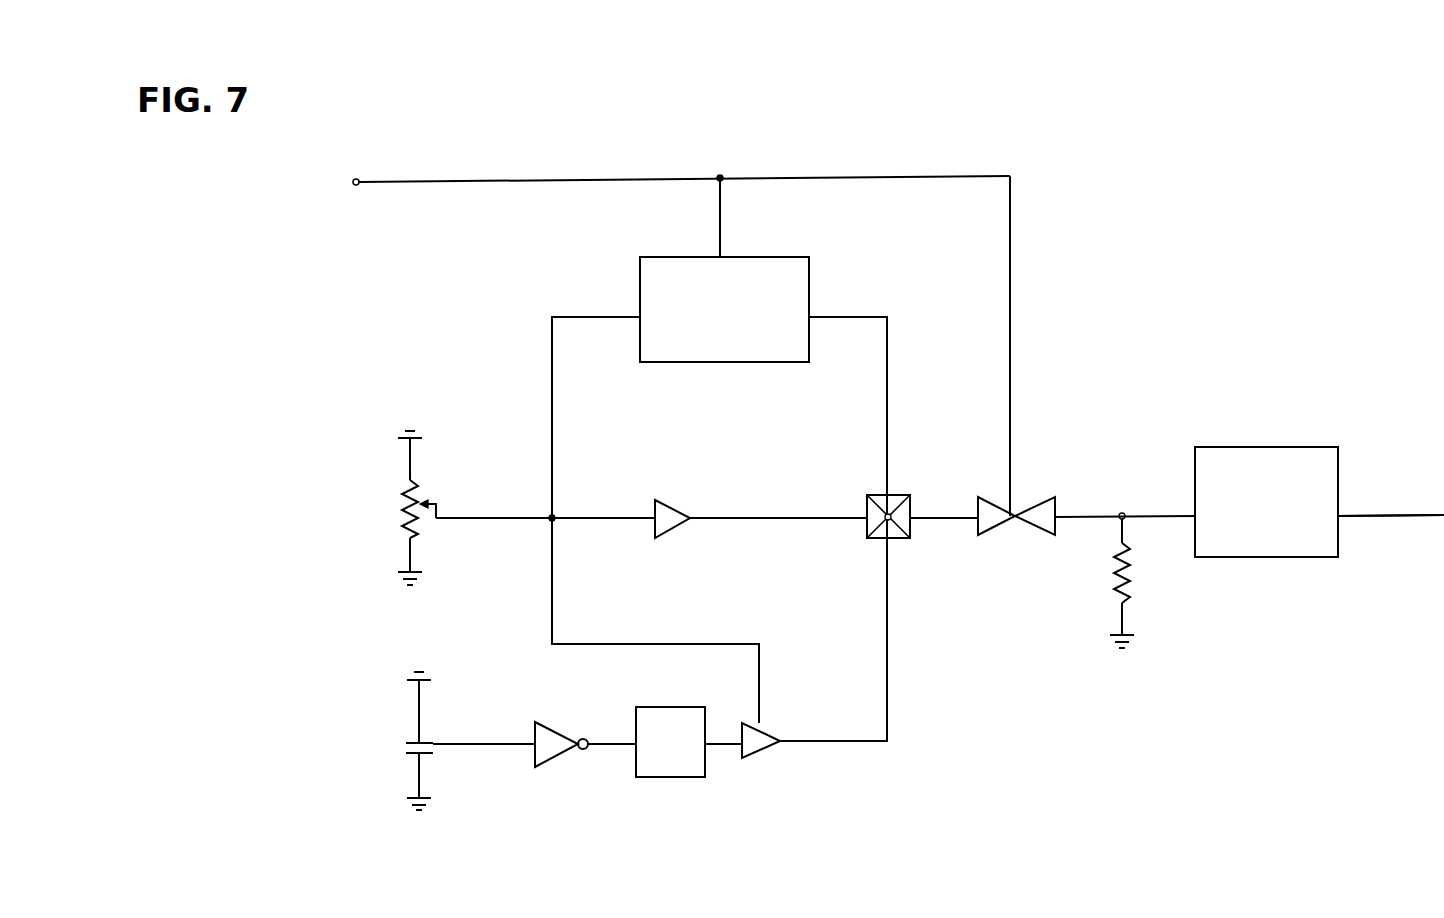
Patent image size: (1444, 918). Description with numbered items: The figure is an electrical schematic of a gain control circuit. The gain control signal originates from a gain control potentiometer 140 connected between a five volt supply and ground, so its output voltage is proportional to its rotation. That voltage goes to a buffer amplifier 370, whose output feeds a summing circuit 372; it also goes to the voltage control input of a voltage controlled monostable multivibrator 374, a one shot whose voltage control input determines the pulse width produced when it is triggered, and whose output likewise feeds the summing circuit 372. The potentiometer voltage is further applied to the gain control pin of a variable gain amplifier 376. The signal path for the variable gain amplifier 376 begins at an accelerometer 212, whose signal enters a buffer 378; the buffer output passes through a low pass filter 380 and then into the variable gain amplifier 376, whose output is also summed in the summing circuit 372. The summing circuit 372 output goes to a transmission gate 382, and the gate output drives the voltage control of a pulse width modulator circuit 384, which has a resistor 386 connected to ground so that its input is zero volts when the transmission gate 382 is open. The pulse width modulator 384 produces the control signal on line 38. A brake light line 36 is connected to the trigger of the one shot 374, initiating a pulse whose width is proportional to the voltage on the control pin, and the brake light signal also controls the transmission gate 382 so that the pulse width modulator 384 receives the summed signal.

The brake light line 36 is at (356, 179).
The voltage controlled monostable multivibrator 374 is at (648, 257).
The gain control potentiometer 140 is at (408, 495).
The buffer amplifier 370 is at (673, 531).
The summing circuit 372 is at (912, 537).
The transmission gate 382 is at (1030, 495).
The resistor 386 is at (1130, 584).
The pulse width modulator circuit 384 is at (1300, 447).
The line 38 is at (1400, 508).
The accelerometer 212 is at (415, 740).
The buffer 378 is at (540, 767).
The low pass filter 380 is at (650, 777).
The variable gain amplifier 376 is at (770, 730).